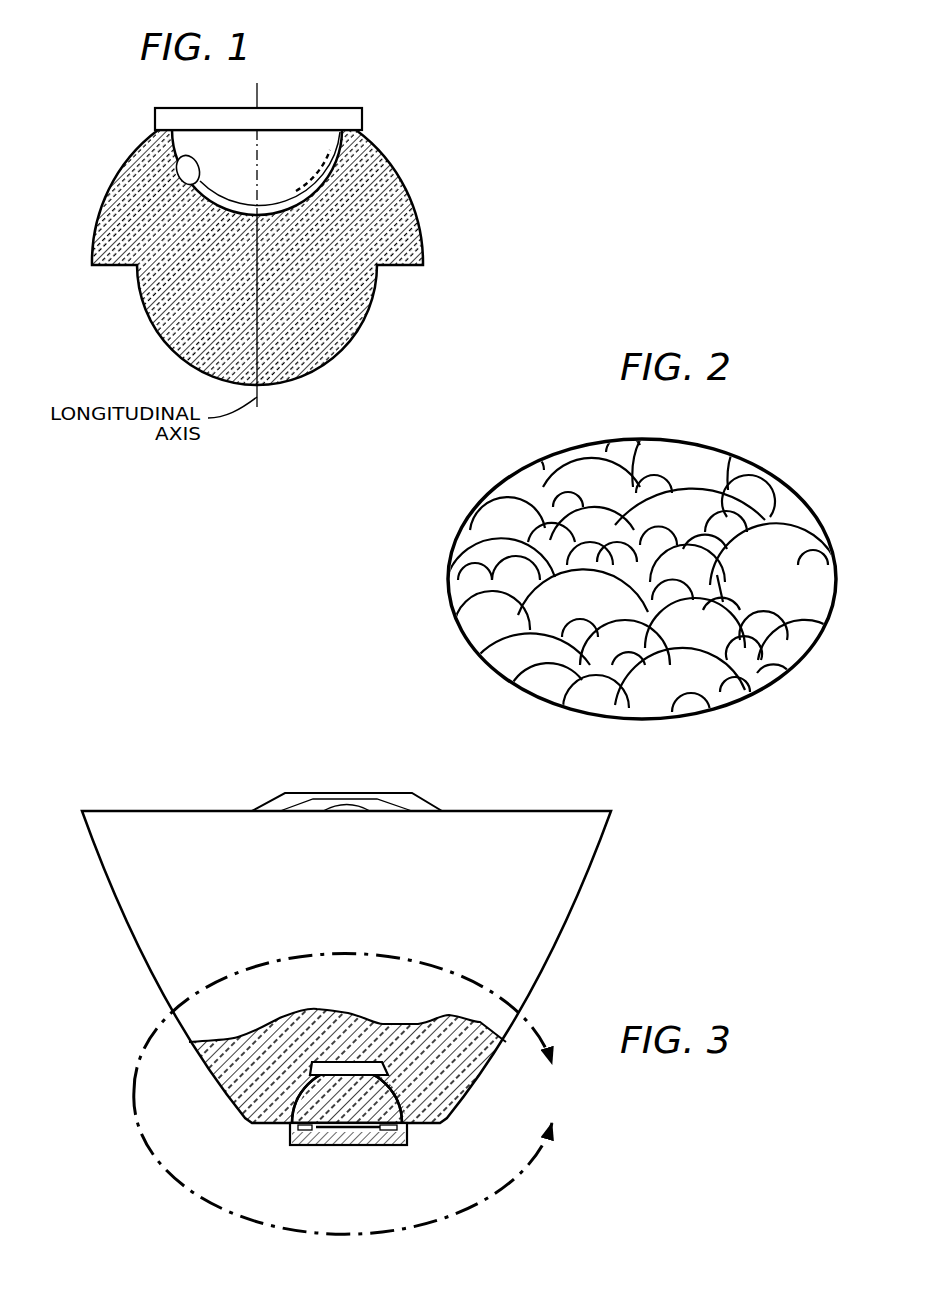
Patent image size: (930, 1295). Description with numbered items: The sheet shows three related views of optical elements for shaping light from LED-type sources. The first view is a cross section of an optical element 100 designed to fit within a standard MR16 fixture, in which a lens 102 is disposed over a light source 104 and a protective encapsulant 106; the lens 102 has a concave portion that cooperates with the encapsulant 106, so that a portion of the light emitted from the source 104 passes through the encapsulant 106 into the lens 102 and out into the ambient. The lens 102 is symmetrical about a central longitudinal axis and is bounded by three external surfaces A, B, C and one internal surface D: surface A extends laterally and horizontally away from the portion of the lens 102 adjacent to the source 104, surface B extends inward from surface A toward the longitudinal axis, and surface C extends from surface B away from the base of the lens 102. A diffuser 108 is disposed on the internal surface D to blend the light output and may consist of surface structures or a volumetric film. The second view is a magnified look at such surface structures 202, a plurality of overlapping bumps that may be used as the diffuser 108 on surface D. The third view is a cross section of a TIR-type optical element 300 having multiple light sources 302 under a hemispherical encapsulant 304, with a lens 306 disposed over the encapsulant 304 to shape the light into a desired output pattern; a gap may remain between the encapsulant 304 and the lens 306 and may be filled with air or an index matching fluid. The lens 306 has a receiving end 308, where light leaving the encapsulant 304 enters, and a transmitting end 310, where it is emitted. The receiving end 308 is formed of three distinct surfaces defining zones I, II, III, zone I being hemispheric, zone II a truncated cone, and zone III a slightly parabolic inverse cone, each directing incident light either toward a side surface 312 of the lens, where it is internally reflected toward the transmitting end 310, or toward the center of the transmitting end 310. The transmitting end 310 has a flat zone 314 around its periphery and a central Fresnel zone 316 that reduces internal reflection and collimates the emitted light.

In FIG. 1, the optical element 100 is at (346, 80).
In FIG. 1, the lens 102 is at (328, 371).
In FIG. 1, the light source 104 is at (155, 120).
In FIG. 1, the protective encapsulant 106 is at (322, 154).
In FIG. 1, the diffuser 108 is at (320, 200).
In FIG. 2, the diffuser 108 is at (745, 432).
In FIG. 2, the surface structures 202 is at (580, 477).
In FIG. 3, the optical element 300 is at (228, 741).
In FIG. 3, the light sources 302 is at (330, 1140).
In FIG. 3, the hemispherical encapsulant 304 is at (304, 1090).
In FIG. 3, the lens 306 is at (142, 978).
In FIG. 3, the receiving end 308 is at (270, 1135).
In FIG. 3, the transmitting end 310 is at (139, 811).
In FIG. 3, the side surface 312 is at (575, 905).
In FIG. 3, the flat zone 314 is at (541, 811).
In FIG. 3, the Fresnel zone 316 is at (385, 790).
In FIG. 1, the surface A is at (424, 238).
In FIG. 1, the surface B is at (402, 267).
In FIG. 1, the surface C is at (145, 315).
In FIG. 1, the surface D is at (184, 184).
In FIG. 3, the zone I is at (420, 1094).
In FIG. 3, the zone II is at (322, 1073).
In FIG. 3, the zone III is at (317, 1063).